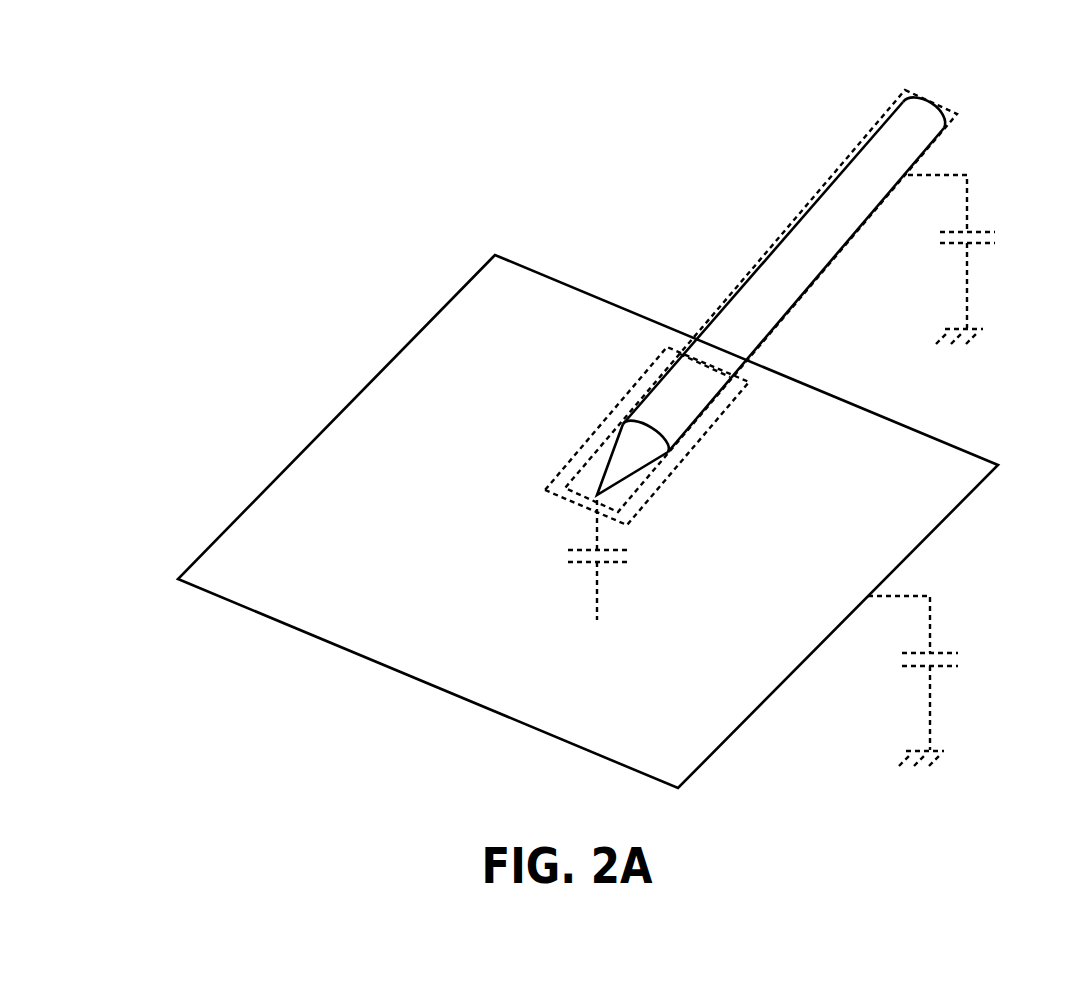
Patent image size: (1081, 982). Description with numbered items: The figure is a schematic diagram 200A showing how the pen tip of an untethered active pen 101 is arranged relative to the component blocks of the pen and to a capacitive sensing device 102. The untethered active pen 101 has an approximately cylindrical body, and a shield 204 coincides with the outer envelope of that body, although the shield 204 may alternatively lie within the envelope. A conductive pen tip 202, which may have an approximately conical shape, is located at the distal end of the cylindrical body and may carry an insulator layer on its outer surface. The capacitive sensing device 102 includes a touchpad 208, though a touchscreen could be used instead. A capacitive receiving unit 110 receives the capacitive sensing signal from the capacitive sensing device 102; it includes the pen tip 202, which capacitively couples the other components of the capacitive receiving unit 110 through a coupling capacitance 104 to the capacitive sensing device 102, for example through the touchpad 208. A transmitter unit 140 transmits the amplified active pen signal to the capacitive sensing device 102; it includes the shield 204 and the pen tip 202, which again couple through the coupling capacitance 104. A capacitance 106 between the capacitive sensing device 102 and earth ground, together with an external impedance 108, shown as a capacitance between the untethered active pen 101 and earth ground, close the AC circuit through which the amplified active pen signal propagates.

The schematic diagram 200A is at (286, 154).
The untethered active pen 101 is at (765, 301).
The transmitter unit 140 is at (948, 118).
The external impedance 108 is at (977, 232).
The capacitive sensing device 102 is at (451, 266).
The shield 204 is at (778, 263).
The capacitive receiving unit 110 is at (652, 377).
The pen tip 202 is at (623, 455).
The coupling capacitance 104 is at (608, 550).
The touchpad 208 is at (283, 579).
The capacitance 106 is at (940, 652).